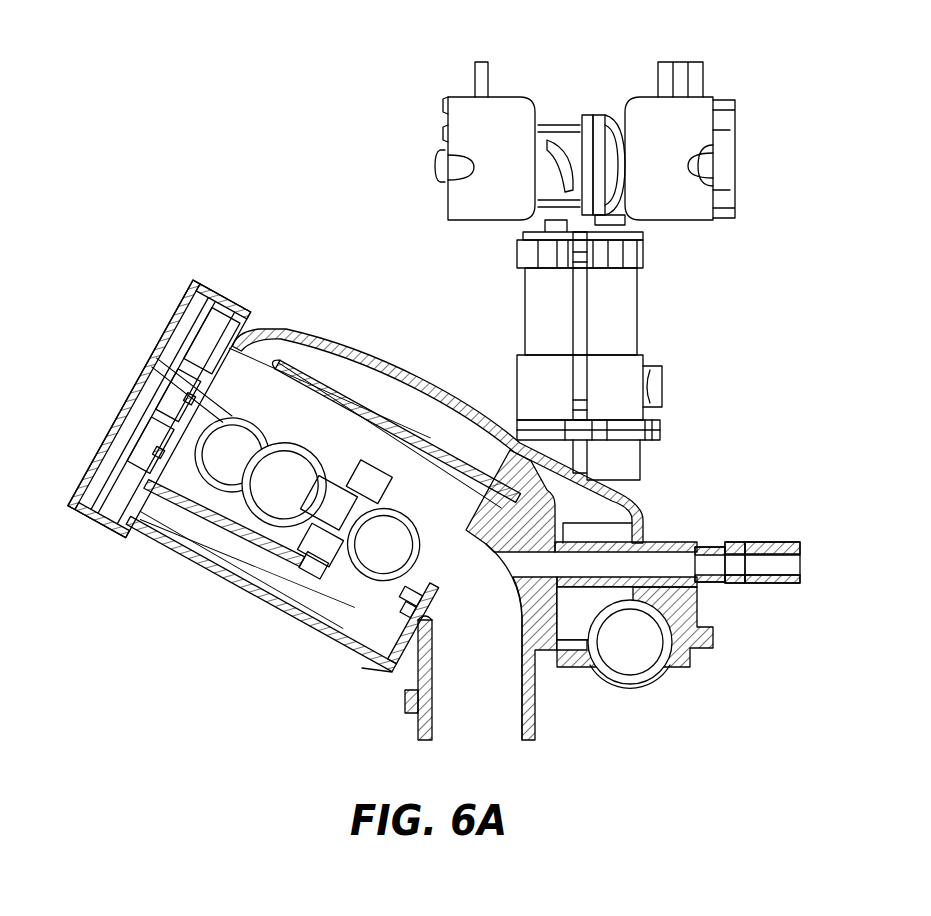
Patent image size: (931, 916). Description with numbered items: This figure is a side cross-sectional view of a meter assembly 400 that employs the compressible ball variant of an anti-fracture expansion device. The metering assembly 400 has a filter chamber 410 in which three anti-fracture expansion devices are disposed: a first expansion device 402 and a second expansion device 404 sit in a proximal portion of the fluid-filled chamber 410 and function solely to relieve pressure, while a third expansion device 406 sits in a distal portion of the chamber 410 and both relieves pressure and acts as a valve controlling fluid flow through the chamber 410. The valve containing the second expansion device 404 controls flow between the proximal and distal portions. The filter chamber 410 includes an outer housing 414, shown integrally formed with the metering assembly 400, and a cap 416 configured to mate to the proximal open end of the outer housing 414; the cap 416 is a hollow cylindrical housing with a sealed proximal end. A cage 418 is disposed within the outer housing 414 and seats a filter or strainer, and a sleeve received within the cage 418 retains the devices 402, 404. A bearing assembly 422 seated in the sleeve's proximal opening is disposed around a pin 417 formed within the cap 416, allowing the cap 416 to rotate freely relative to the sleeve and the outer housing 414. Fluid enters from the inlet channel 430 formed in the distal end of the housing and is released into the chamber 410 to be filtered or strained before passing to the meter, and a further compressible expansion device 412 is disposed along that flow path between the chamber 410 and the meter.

The meter assembly 400 is at (250, 98).
The first expansion device 402 is at (232, 455).
The second expansion device 404 is at (284, 485).
The third expansion device 406 is at (384, 545).
The filter chamber 410 is at (358, 738).
The fourth expansion device 412 is at (640, 653).
The outer housing 414 is at (274, 515).
The cap 416 is at (159, 409).
The pin 417 is at (189, 399).
The cage 418 is at (333, 488).
The bearing assembly 422 is at (158, 452).
The inlet channel 430 is at (367, 657).